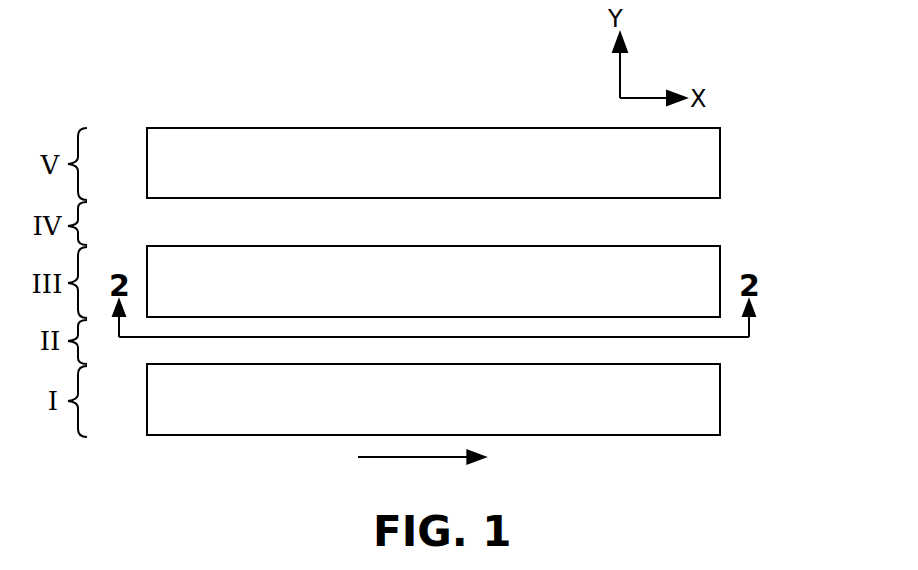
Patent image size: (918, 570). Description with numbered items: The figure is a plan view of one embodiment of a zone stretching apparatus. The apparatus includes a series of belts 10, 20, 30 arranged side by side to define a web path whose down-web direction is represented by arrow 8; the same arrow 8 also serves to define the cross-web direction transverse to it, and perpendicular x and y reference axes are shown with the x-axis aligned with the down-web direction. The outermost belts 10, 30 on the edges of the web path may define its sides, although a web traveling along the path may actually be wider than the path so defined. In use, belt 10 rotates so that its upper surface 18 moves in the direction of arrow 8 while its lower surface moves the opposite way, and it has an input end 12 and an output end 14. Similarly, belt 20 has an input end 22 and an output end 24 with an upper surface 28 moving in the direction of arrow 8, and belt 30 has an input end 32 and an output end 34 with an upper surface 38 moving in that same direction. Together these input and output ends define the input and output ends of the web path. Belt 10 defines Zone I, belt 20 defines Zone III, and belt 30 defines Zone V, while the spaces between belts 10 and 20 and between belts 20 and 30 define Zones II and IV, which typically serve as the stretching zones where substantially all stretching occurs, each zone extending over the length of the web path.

The arrow 8 is at (419, 458).
The belt 10 is at (288, 436).
The input end 12 is at (147, 405).
The output end 14 is at (720, 399).
The upper surface 18 is at (553, 427).
The belt 20 is at (287, 245).
The input end 22 is at (147, 262).
The output end 24 is at (720, 256).
The upper surface 28 is at (388, 254).
The belt 30 is at (287, 126).
The input end 32 is at (147, 163).
The output end 34 is at (720, 167).
The upper surface 38 is at (388, 136).